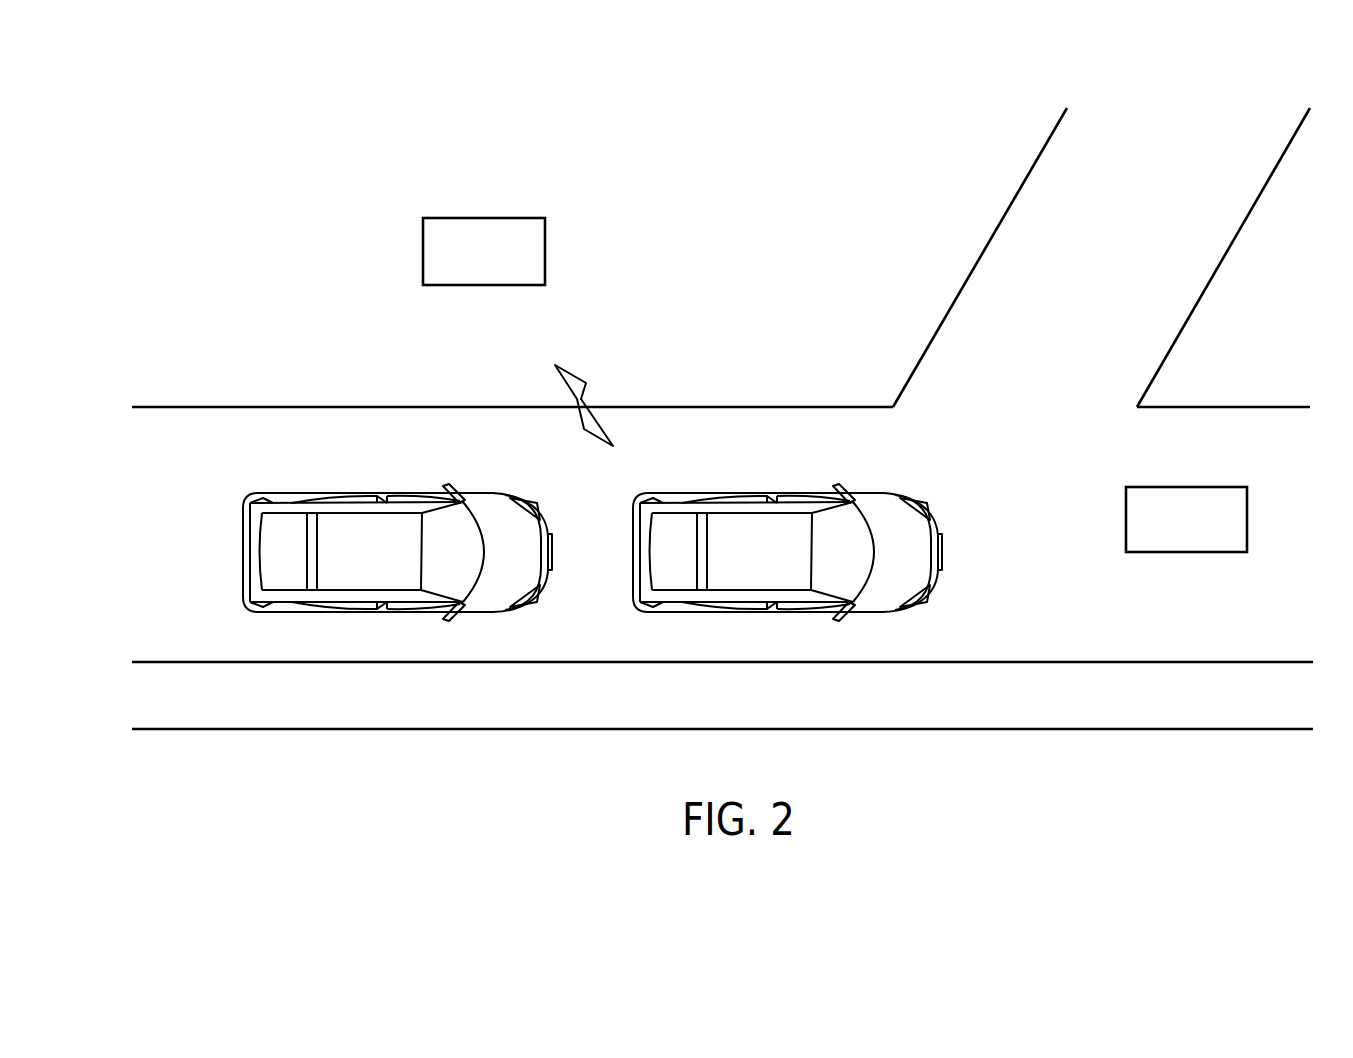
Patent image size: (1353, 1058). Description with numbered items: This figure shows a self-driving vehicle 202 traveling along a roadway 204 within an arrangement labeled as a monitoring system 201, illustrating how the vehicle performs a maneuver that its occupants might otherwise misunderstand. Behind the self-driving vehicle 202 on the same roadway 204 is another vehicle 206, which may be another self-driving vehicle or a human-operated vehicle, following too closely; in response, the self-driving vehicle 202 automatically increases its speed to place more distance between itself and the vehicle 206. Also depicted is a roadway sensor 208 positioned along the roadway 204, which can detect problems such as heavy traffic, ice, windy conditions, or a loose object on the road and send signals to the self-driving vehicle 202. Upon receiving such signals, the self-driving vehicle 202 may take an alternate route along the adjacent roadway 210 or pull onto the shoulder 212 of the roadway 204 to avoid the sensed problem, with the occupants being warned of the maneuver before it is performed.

The monitoring system 201 is at (545, 250).
The self-driving vehicle 202 is at (792, 566).
The roadway 204 is at (203, 541).
The vehicle 206 is at (402, 566).
The roadway sensor 208 is at (1247, 517).
The roadway 210 is at (1143, 236).
The shoulder 212 is at (343, 705).